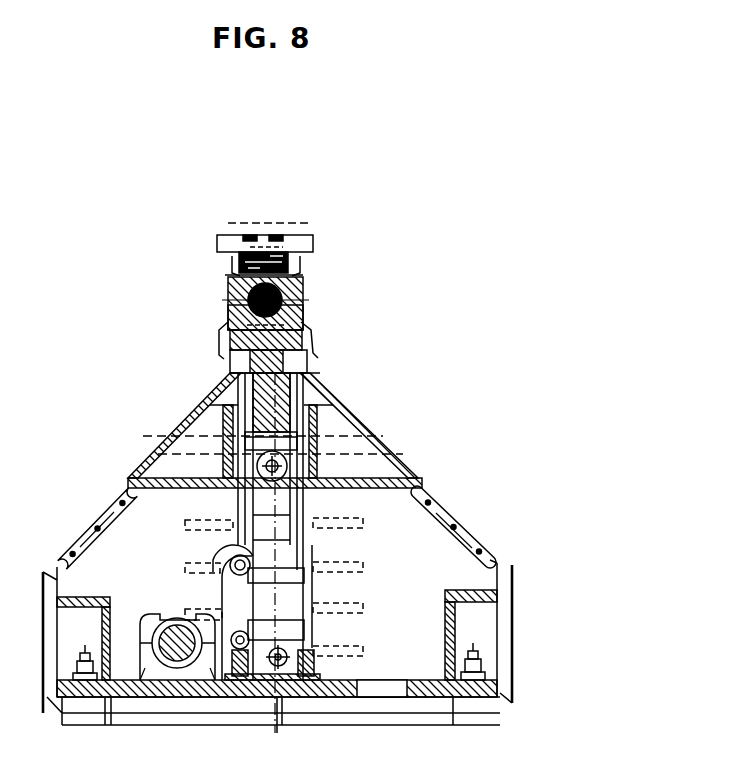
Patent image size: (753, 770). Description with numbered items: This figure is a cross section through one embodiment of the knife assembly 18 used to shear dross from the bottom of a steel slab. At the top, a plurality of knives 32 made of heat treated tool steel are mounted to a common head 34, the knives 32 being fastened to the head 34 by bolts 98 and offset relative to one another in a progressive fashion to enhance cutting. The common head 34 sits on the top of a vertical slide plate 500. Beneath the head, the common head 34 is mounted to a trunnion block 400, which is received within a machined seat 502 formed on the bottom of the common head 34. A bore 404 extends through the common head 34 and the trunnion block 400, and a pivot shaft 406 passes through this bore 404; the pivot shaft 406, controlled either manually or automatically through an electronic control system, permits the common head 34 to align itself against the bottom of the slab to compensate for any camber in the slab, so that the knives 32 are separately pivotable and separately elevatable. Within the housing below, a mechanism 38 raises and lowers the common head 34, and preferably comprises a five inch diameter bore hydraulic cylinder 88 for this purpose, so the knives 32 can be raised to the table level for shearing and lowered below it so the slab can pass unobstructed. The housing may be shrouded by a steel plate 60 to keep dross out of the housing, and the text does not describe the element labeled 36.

The knife assembly 18 is at (541, 601).
The knives 32 is at (317, 233).
The common head 34 is at (294, 267).
The strut 36 is at (455, 512).
The mechanism 38 is at (172, 542).
The steel plate 60 is at (315, 338).
The hydraulic cylinder 88 is at (313, 508).
The bolts 98 is at (252, 234).
The trunnion block 400 is at (228, 297).
The bore 404 is at (303, 285).
The pivot shaft 406 is at (228, 312).
The vertical slide plate 500 is at (233, 270).
The machined seat 502 is at (232, 364).